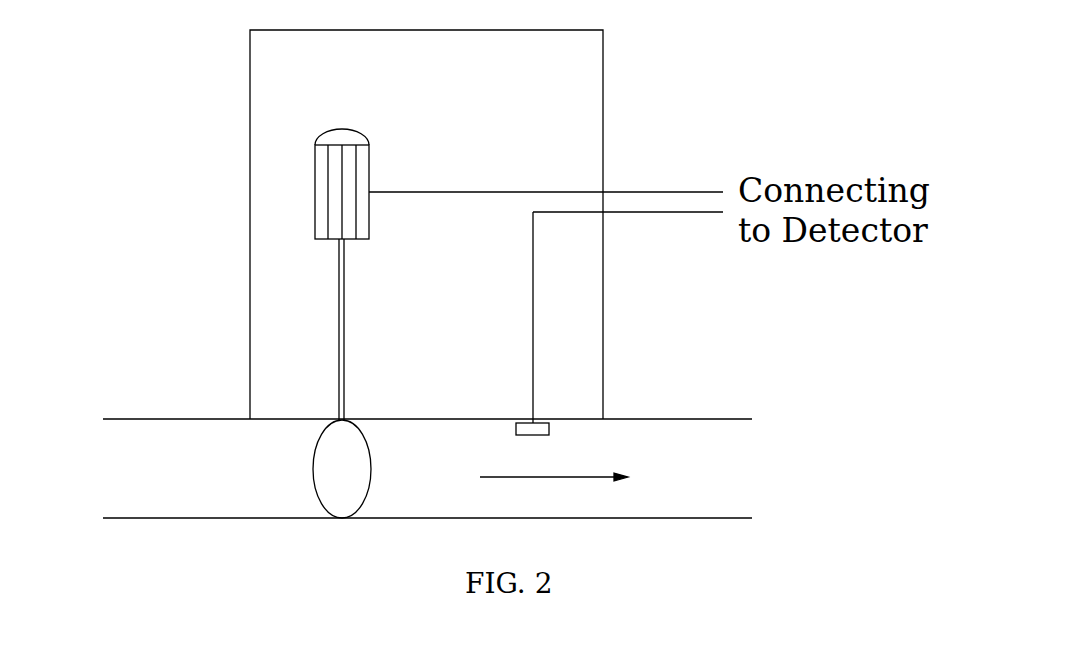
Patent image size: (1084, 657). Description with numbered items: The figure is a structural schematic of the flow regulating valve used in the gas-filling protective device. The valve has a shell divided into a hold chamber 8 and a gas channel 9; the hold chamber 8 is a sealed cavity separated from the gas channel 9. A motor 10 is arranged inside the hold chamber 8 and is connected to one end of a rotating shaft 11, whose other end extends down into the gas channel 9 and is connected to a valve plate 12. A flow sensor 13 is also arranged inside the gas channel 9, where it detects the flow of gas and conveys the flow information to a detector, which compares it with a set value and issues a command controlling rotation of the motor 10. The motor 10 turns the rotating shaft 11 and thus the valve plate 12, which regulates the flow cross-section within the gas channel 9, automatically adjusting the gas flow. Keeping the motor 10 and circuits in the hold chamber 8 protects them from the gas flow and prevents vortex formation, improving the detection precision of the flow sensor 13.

The hold chamber 8 is at (603, 90).
The gas channel 9 is at (725, 419).
The motor 10 is at (318, 193).
The rotating shaft 11 is at (340, 342).
The valve plate 12 is at (327, 476).
The flow sensor 13 is at (532, 430).